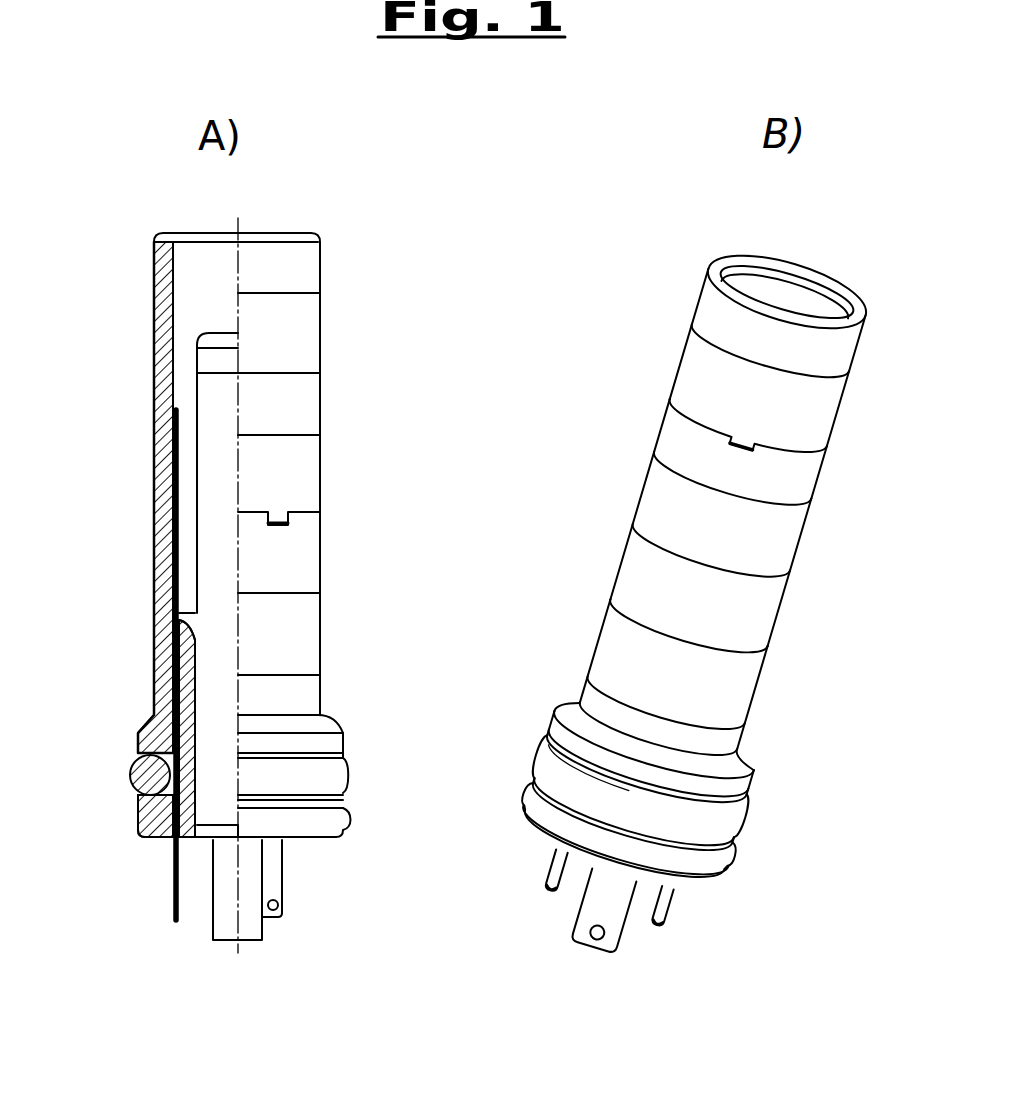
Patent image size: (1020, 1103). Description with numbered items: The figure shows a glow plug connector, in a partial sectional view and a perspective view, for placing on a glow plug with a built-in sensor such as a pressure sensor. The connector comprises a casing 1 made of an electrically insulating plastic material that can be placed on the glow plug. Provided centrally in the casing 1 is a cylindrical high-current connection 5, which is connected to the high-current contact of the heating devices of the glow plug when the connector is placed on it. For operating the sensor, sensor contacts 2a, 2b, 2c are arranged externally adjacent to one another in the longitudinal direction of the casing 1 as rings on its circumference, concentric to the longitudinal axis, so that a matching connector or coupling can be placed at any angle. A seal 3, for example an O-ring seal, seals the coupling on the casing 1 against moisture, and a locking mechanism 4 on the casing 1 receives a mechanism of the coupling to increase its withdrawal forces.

The casing 1 is at (153, 250).
The sensor contact 2a is at (153, 345).
The sensor contact 2b is at (155, 480).
The sensor contact 2c is at (155, 618).
The seal 3 is at (132, 775).
The locking mechanism 4 is at (530, 785).
The high-current connection 5 is at (217, 362).